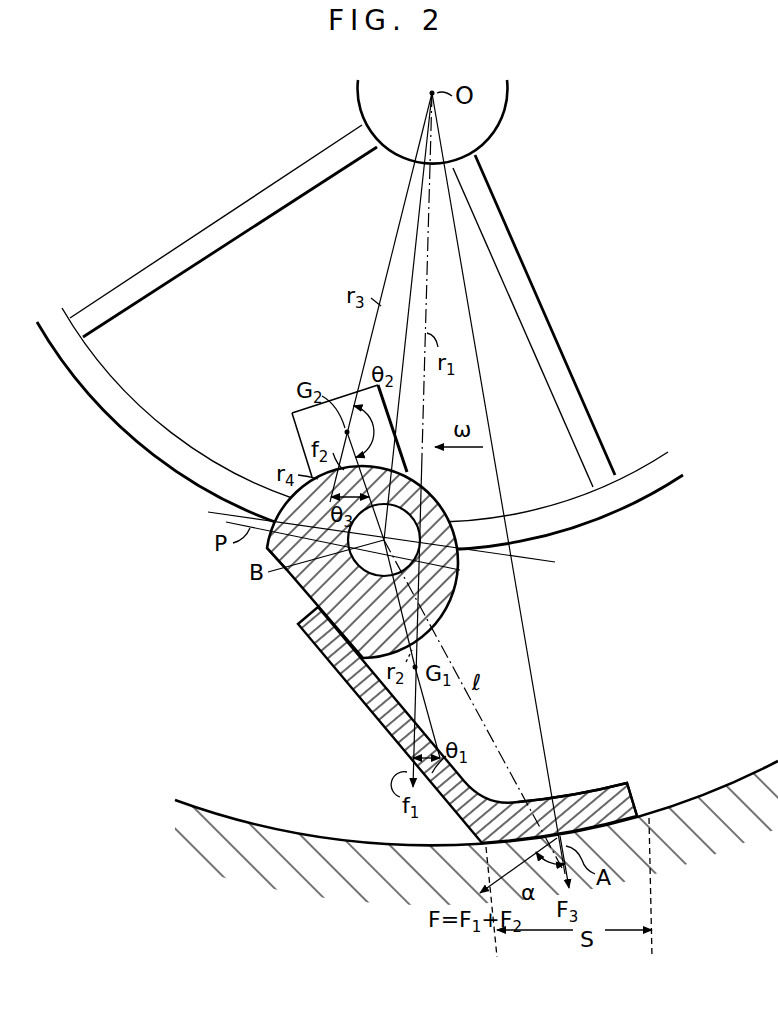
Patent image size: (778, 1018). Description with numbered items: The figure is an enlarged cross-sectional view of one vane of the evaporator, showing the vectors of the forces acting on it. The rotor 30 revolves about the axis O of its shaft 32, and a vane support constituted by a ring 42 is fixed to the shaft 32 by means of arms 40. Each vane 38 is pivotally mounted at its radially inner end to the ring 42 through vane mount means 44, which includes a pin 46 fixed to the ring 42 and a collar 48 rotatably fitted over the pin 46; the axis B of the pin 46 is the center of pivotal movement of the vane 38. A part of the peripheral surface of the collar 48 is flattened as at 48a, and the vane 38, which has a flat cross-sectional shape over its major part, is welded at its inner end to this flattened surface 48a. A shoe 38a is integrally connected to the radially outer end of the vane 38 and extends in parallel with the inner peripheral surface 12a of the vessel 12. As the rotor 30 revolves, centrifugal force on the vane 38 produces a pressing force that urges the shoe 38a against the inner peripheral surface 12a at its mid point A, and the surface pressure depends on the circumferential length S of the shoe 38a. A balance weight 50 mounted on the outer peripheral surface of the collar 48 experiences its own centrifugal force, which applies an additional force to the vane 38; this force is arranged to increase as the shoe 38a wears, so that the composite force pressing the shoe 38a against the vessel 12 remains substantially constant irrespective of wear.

The rotor 30 is at (205, 134).
The shaft 32 is at (357, 104).
The arms 40 is at (187, 243).
The ring 42 is at (113, 418).
The vane mount means 44 is at (276, 501).
The pin 46 is at (407, 530).
The collar 48 is at (451, 580).
The flattened surface 48a is at (288, 572).
The balance weight 50 is at (343, 405).
The vane 38 is at (351, 690).
The shoe 38a is at (601, 788).
The vessel 12 is at (270, 855).
The inner peripheral surface 12a is at (246, 822).